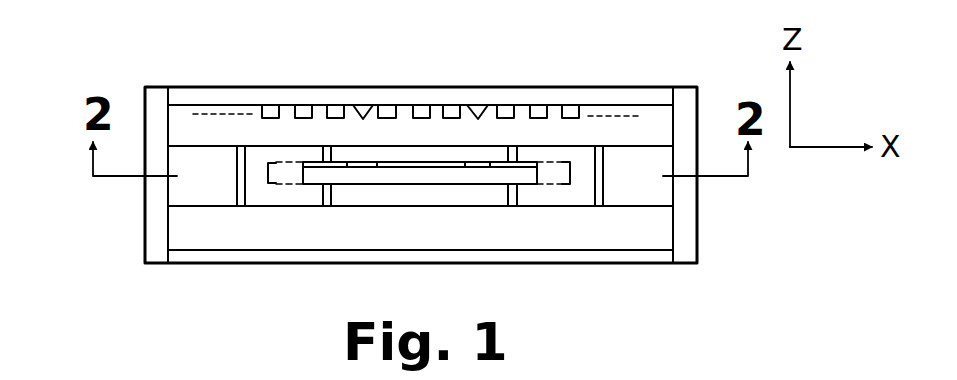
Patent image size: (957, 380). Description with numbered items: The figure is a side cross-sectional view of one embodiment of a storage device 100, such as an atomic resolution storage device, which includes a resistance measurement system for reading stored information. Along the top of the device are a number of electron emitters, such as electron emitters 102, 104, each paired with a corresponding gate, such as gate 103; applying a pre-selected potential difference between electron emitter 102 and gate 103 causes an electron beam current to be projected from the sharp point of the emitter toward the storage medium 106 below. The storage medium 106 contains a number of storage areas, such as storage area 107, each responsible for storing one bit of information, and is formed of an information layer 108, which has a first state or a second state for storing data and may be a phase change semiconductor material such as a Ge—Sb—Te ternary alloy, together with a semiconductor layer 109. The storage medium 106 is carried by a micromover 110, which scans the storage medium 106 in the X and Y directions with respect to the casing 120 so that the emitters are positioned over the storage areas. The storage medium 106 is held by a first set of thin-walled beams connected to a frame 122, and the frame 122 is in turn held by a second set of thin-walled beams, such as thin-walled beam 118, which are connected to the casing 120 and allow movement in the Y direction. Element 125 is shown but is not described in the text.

The storage device 100 is at (103, 70).
The electron emitter 102 is at (371, 87).
The gate 103 is at (340, 87).
The electron emitter 104 is at (485, 87).
The storage medium 106 is at (305, 149).
The storage area 107 is at (363, 167).
The information layer 108 is at (268, 162).
The semiconductor layer 109 is at (275, 186).
The micromover 110 is at (210, 207).
The thin-walled beam 118 is at (655, 176).
The casing 120 is at (683, 237).
The frame 122 is at (595, 158).
The V-notch 125 is at (430, 87).